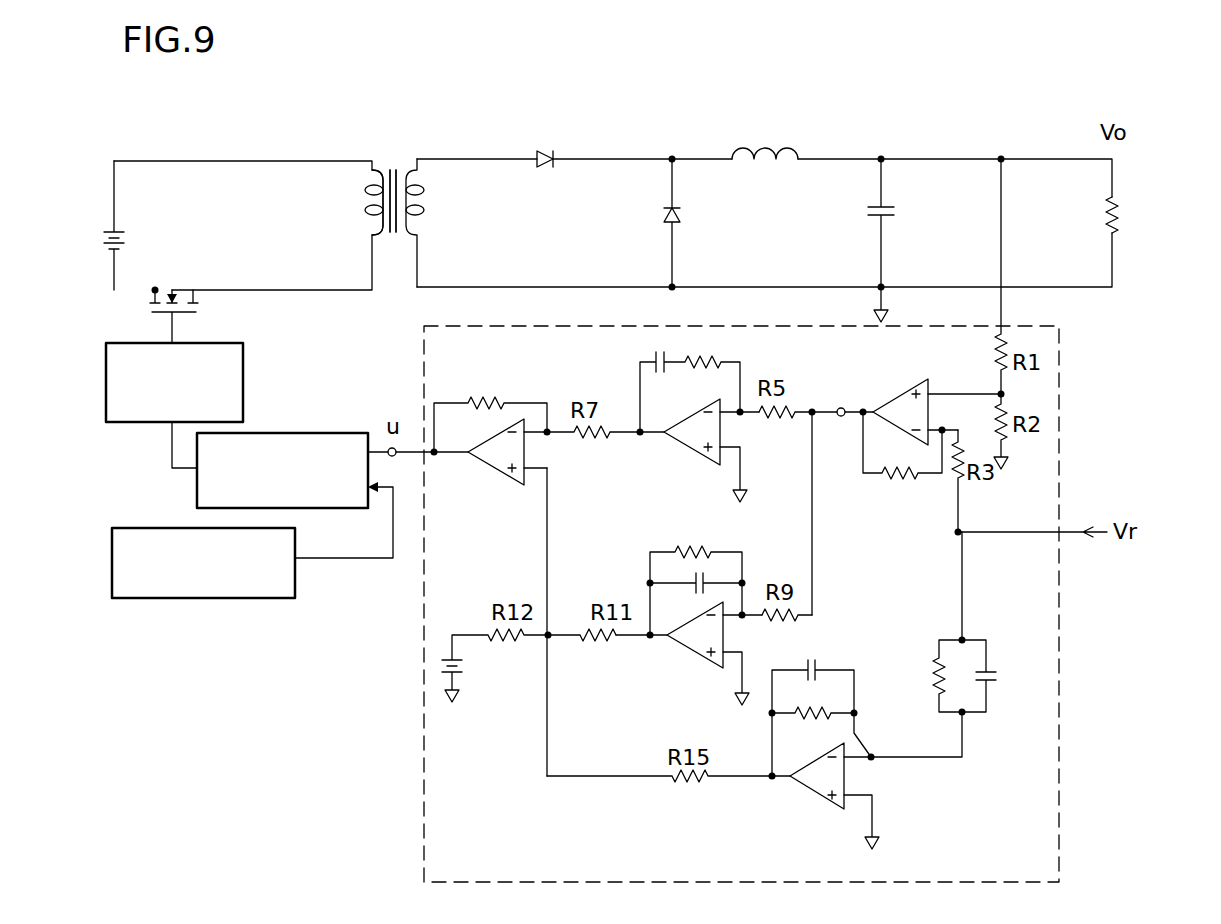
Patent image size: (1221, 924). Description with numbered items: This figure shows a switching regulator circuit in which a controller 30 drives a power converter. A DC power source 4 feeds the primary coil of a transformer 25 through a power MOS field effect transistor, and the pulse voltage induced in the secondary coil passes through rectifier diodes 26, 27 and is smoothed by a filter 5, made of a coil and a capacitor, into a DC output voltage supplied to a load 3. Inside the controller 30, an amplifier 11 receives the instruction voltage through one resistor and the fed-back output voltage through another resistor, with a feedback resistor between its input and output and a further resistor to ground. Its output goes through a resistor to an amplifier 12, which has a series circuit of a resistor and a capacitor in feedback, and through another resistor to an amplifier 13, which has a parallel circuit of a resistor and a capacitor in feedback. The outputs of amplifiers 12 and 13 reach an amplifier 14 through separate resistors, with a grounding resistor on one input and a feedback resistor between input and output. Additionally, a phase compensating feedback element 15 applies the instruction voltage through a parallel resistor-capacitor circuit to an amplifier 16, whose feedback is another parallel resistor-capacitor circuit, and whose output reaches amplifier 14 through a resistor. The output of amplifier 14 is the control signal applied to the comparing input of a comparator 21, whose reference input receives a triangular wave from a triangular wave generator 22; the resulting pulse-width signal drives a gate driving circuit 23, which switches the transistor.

The load 3 is at (1133, 195).
The DC power source 4 is at (122, 232).
The filter 5 is at (836, 130).
The amplifier 11 is at (897, 398).
The amplifier 12 is at (690, 440).
The amplifier 13 is at (700, 640).
The amplifier 14 is at (500, 458).
The phase compensating feedback element 15 is at (930, 781).
The amplifier 16 is at (818, 783).
The comparator 21 is at (299, 433).
The triangular wave generator 22 is at (168, 528).
The gate driving circuit 23 is at (216, 343).
The transformer 25 is at (391, 160).
The rectifier diode 26 is at (544, 152).
The rectifier diode 27 is at (681, 216).
The controller 30 is at (1058, 378).